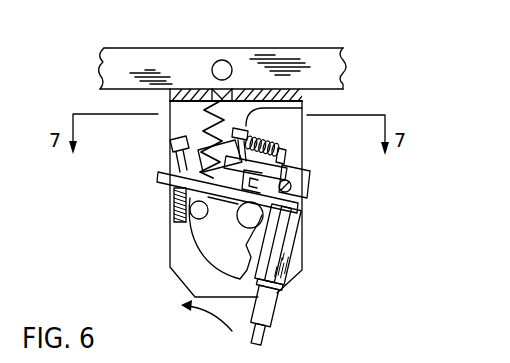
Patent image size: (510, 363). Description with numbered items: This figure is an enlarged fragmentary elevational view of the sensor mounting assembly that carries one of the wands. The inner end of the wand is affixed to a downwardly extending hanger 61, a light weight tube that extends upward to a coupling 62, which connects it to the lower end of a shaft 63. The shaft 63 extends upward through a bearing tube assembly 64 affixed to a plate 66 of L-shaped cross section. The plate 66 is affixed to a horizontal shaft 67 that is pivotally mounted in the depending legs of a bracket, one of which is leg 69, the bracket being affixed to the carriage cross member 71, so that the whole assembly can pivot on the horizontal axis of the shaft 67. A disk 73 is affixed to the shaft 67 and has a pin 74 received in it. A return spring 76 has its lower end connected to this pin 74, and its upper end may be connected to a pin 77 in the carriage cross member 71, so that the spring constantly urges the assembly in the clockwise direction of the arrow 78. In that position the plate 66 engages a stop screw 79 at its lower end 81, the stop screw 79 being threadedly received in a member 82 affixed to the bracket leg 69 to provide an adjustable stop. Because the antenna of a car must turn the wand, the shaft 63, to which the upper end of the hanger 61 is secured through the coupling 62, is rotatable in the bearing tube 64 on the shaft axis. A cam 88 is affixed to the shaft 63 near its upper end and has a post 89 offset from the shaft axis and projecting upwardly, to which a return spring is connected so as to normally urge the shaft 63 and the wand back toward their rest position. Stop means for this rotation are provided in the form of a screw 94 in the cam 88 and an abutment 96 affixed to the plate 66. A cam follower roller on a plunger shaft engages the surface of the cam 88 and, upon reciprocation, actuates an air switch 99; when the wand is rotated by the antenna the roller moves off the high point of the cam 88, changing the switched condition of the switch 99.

The hanger 61 is at (260, 337).
The coupling 62 is at (275, 308).
The shaft 63 is at (273, 293).
The bearing tube assembly 64 is at (275, 257).
The plate 66 is at (265, 232).
The horizontal shaft 67 is at (243, 222).
The depending leg 69 is at (200, 282).
The carriage cross member 71 is at (167, 68).
The disk 73 is at (200, 228).
The pin 74 is at (195, 206).
The return spring 76 is at (214, 89).
The pin 77 is at (232, 66).
The arrow 78 is at (212, 328).
The stop screw 79 is at (168, 142).
The lower end 81 is at (158, 174).
The member 82 is at (168, 143).
The cam 88 is at (311, 180).
The post 89 is at (282, 147).
The screw 94 is at (302, 188).
The abutment 96 is at (286, 163).
The air switch 99 is at (303, 108).